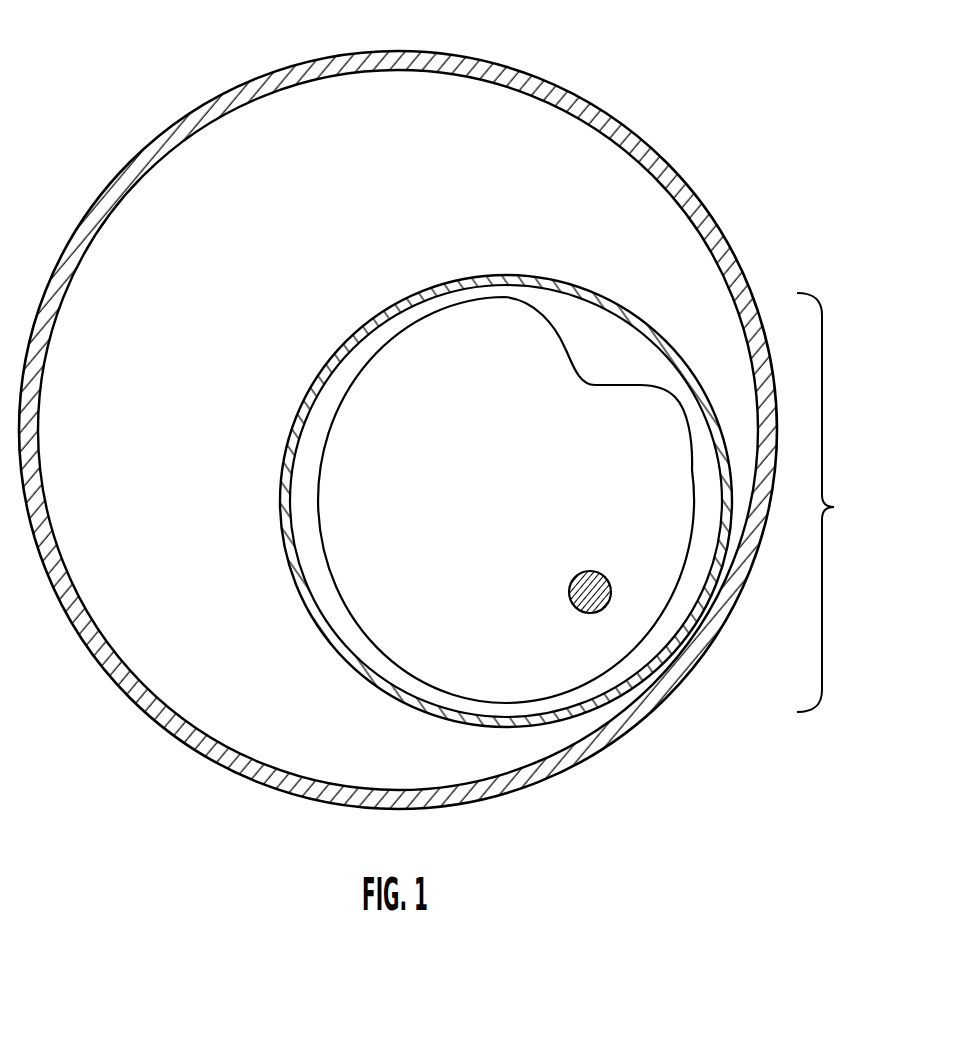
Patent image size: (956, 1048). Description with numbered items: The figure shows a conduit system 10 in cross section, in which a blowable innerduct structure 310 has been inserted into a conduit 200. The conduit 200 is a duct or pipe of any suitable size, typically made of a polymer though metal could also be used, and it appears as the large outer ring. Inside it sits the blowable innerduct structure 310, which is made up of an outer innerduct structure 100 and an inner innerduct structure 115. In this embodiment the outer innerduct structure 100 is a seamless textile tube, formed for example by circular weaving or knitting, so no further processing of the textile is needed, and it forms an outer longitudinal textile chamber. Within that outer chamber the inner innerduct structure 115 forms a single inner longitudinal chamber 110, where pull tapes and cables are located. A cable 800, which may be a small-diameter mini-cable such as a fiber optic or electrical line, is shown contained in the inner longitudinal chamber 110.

The conduit system 10 is at (95, 87).
The conduit 200 is at (549, 82).
The outer innerduct structure 100 is at (548, 279).
The inner longitudinal chamber 110 is at (525, 517).
The inner innerduct structure 115 is at (562, 500).
The blowable innerduct structure 310 is at (839, 502).
The cable 800 is at (590, 570).